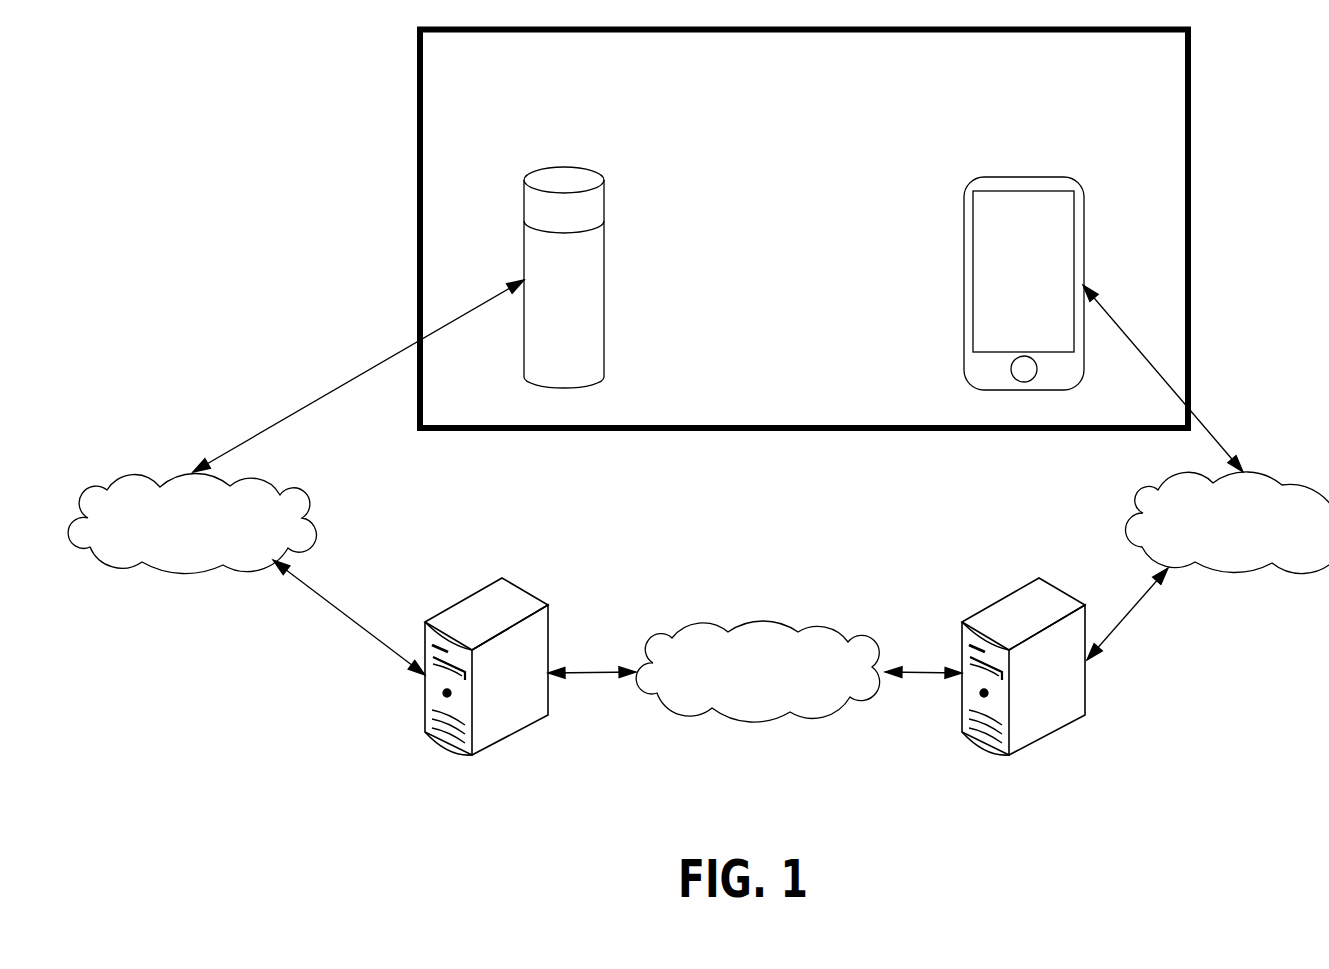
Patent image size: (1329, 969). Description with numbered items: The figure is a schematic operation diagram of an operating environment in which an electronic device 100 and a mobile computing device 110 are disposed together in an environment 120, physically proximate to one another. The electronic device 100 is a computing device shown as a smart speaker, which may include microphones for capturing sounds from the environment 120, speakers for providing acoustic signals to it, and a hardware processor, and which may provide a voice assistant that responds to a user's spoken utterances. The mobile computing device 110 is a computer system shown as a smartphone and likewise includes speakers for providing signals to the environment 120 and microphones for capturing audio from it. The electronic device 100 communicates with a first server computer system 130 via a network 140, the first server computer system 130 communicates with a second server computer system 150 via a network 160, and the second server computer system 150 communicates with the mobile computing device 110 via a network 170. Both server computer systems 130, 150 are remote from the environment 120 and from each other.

The electronic device 100 is at (602, 158).
The mobile computing device 110 is at (1083, 165).
The environment 120 is at (1168, 63).
The first server computer system 130 is at (520, 600).
The network 140 is at (213, 536).
The second server computer system 150 is at (1058, 600).
The network 160 is at (782, 683).
The network 170 is at (1265, 536).